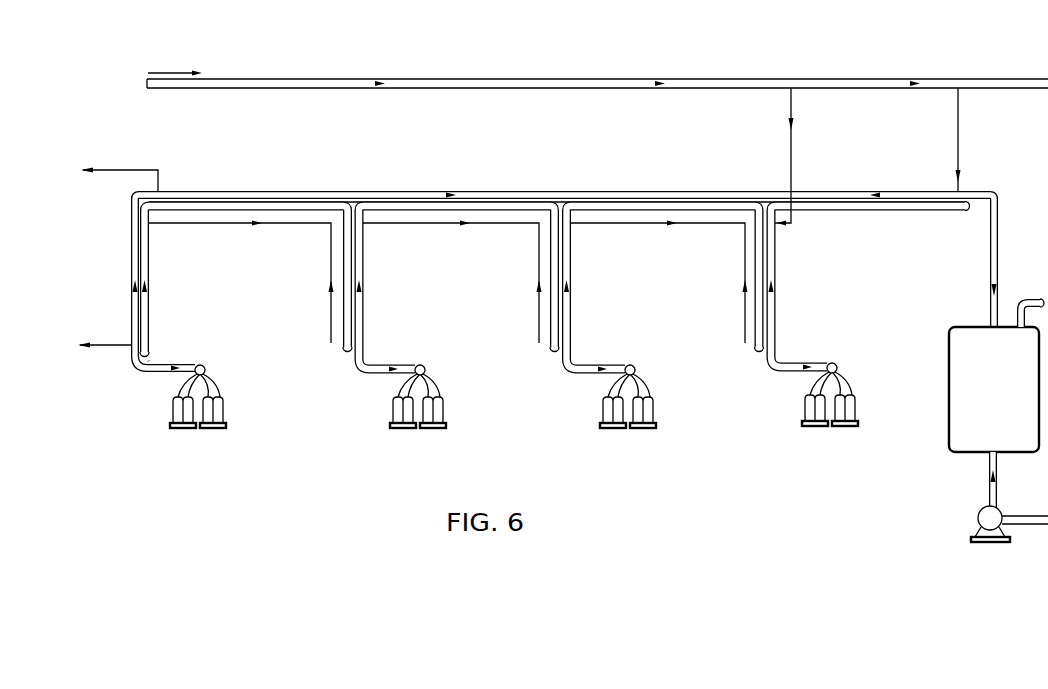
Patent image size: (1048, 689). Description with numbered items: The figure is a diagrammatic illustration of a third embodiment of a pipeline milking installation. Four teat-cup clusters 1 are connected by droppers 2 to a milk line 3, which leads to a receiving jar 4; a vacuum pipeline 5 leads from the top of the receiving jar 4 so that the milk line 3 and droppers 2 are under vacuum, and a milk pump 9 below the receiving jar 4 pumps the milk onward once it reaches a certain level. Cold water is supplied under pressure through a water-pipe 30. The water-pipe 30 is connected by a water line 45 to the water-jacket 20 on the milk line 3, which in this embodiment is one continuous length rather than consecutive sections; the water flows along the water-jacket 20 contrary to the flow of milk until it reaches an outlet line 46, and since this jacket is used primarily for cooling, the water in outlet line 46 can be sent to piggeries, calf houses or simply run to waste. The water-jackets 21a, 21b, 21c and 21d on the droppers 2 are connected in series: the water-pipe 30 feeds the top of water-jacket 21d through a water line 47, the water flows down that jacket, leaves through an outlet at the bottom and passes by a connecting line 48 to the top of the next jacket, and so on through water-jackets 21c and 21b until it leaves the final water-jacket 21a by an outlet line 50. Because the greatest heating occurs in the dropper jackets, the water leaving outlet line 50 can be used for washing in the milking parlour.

The teat-cup cluster 1 is at (207, 370).
The dropper 2 is at (151, 364).
The milk line 3 is at (238, 192).
The receiving jar 4 is at (951, 357).
The vacuum pipeline 5 is at (1020, 300).
The milk pump 9 is at (978, 518).
The water-jacket 20 is at (426, 190).
The water-jacket 21a is at (207, 303).
The water-jacket 21b is at (366, 288).
The water-jacket 21c is at (623, 303).
The water-jacket 21d is at (827, 303).
The water-pipe 30 is at (832, 79).
The water line 45 is at (960, 150).
The outlet line 46 is at (132, 170).
The water line 47 is at (793, 152).
The connecting line 48 is at (272, 226).
The outlet line 50 is at (103, 347).